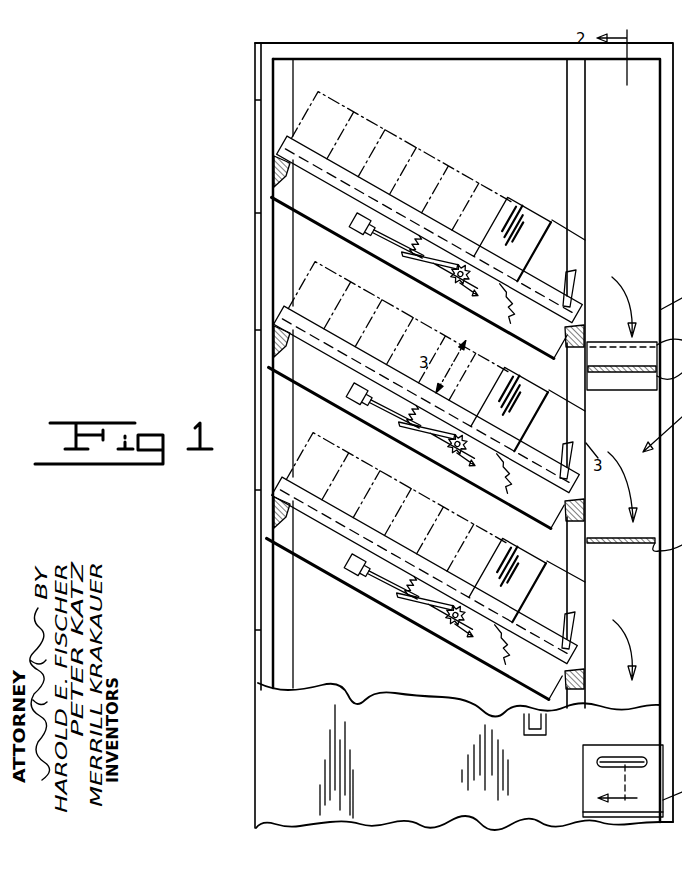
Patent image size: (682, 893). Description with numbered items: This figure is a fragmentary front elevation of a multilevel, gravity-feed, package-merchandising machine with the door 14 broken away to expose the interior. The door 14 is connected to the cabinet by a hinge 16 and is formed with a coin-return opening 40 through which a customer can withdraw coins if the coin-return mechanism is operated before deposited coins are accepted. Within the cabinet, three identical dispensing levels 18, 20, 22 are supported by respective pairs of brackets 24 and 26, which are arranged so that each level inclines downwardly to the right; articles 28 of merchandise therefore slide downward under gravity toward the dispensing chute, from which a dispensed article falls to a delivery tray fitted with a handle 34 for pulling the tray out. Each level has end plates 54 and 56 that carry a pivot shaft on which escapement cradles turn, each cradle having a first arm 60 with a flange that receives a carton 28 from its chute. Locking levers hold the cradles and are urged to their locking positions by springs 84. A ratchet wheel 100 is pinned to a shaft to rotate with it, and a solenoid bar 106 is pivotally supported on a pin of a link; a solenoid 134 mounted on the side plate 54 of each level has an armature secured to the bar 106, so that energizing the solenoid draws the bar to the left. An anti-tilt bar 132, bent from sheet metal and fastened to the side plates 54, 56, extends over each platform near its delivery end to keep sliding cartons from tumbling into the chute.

The door 14 is at (398, 706).
The hinge 16 is at (258, 627).
The dispensing level 18 is at (492, 182).
The dispensing level 20 is at (462, 364).
The dispensing level 22 is at (418, 515).
The bracket 24 is at (270, 165).
The bracket 26 is at (588, 332).
The article of merchandise 28 is at (377, 124).
The handle 34 is at (634, 757).
The coin-return opening 40 is at (526, 738).
The end plate 54 is at (553, 346).
The end plate 56 is at (372, 252).
The first arm 60 is at (580, 282).
The spring 84 is at (418, 243).
The ratchet wheel 100 is at (472, 284).
The solenoid bar 106 is at (438, 282).
The anti-tilt bar 132 is at (572, 213).
The solenoid 134 is at (356, 229).